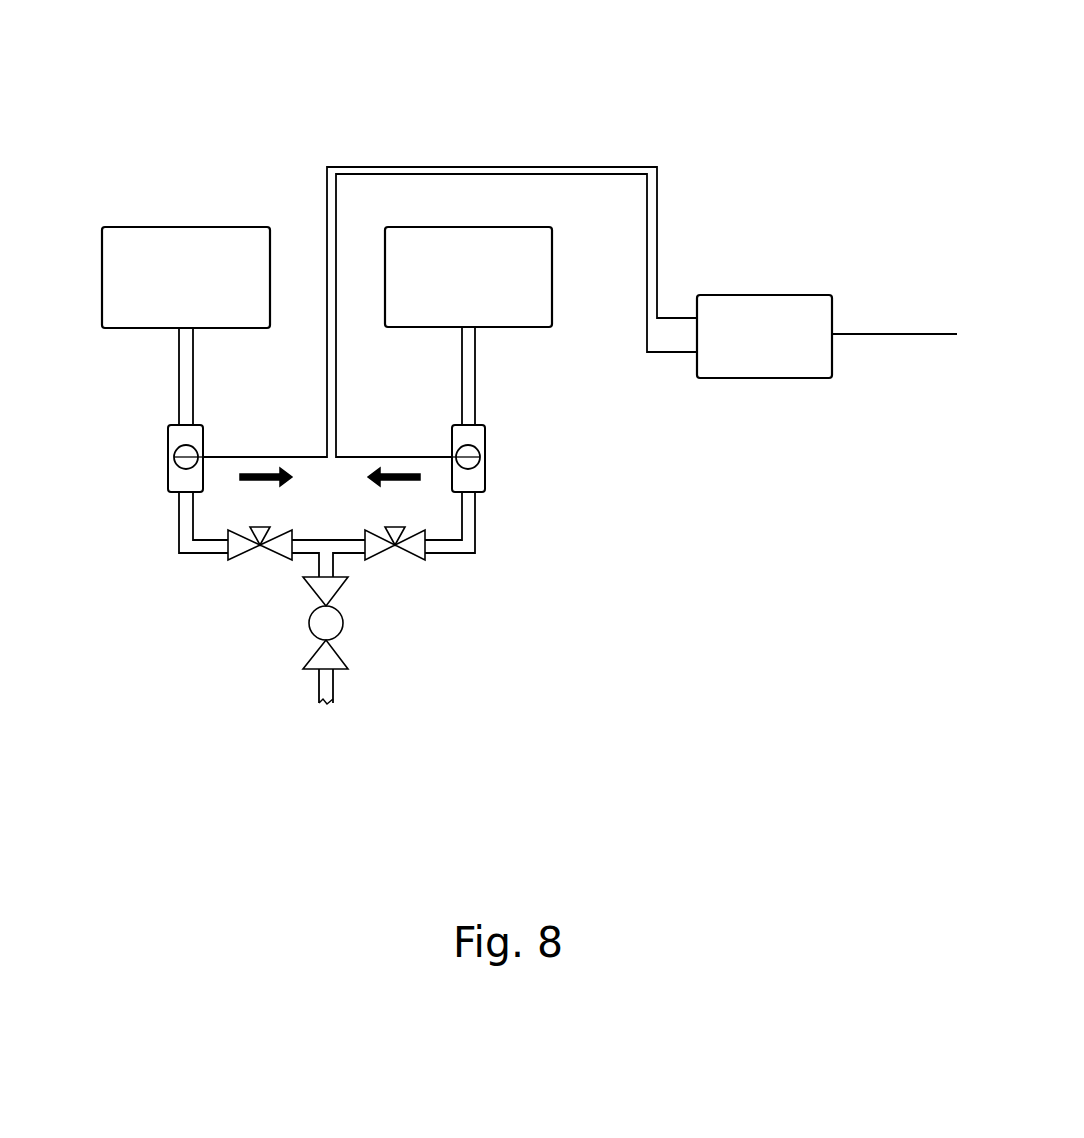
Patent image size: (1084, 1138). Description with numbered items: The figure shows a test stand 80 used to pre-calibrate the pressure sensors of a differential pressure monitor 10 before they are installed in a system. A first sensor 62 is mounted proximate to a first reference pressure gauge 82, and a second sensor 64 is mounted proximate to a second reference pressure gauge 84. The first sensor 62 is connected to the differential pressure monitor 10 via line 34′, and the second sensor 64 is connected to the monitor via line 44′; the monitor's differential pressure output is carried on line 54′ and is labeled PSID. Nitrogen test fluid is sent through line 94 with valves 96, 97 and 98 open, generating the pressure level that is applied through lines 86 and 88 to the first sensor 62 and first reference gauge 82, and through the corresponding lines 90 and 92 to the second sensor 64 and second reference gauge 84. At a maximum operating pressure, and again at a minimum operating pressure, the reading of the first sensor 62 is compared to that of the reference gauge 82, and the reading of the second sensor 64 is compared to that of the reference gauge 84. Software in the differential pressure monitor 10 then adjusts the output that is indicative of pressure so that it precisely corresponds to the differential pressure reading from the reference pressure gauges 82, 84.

The first reference pressure gauge 82 is at (178, 224).
The second reference pressure gauge 84 is at (505, 225).
The line 88 is at (179, 378).
The second pipe connecting reference gauge to pressure sensor 92 is at (475, 375).
The first sensor 62 is at (170, 458).
The second sensor 64 is at (477, 457).
The line 34′ is at (450, 244).
The line 44′ is at (516, 315).
The line 86 is at (179, 530).
The second supply pipe 90 is at (475, 530).
The valve 96 is at (243, 552).
The valve 98 is at (408, 555).
The valve 97 is at (310, 592).
The line 94 is at (315, 688).
The differential pressure monitor 10 is at (767, 293).
The PSID differential pressure output signal 54′ is at (894, 263).
The test stand 80 is at (690, 132).